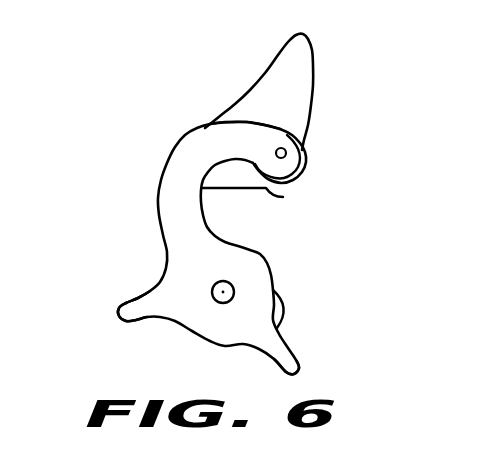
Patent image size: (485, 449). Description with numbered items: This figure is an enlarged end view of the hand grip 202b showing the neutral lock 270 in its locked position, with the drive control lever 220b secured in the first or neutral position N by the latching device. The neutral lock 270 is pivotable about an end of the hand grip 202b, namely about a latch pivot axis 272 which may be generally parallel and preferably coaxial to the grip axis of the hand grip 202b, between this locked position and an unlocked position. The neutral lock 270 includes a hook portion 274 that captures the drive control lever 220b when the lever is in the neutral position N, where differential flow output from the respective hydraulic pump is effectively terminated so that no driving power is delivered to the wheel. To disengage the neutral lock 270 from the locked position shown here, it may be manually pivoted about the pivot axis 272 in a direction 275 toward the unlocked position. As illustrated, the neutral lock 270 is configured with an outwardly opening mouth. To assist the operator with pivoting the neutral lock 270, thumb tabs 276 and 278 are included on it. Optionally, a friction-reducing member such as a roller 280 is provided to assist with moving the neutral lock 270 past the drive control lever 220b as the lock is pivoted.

The neutral lock 270 is at (177, 148).
The latch pivot axis 272 is at (222, 303).
The hook portion 274 is at (245, 123).
The direction 275 is at (354, 37).
The thumb tab 276 is at (127, 302).
The thumb tab 278 is at (300, 357).
The roller 280 is at (306, 155).
The drive control lever 220b is at (283, 197).
The hand grip 202b is at (290, 306).
The neutral position N is at (237, 190).